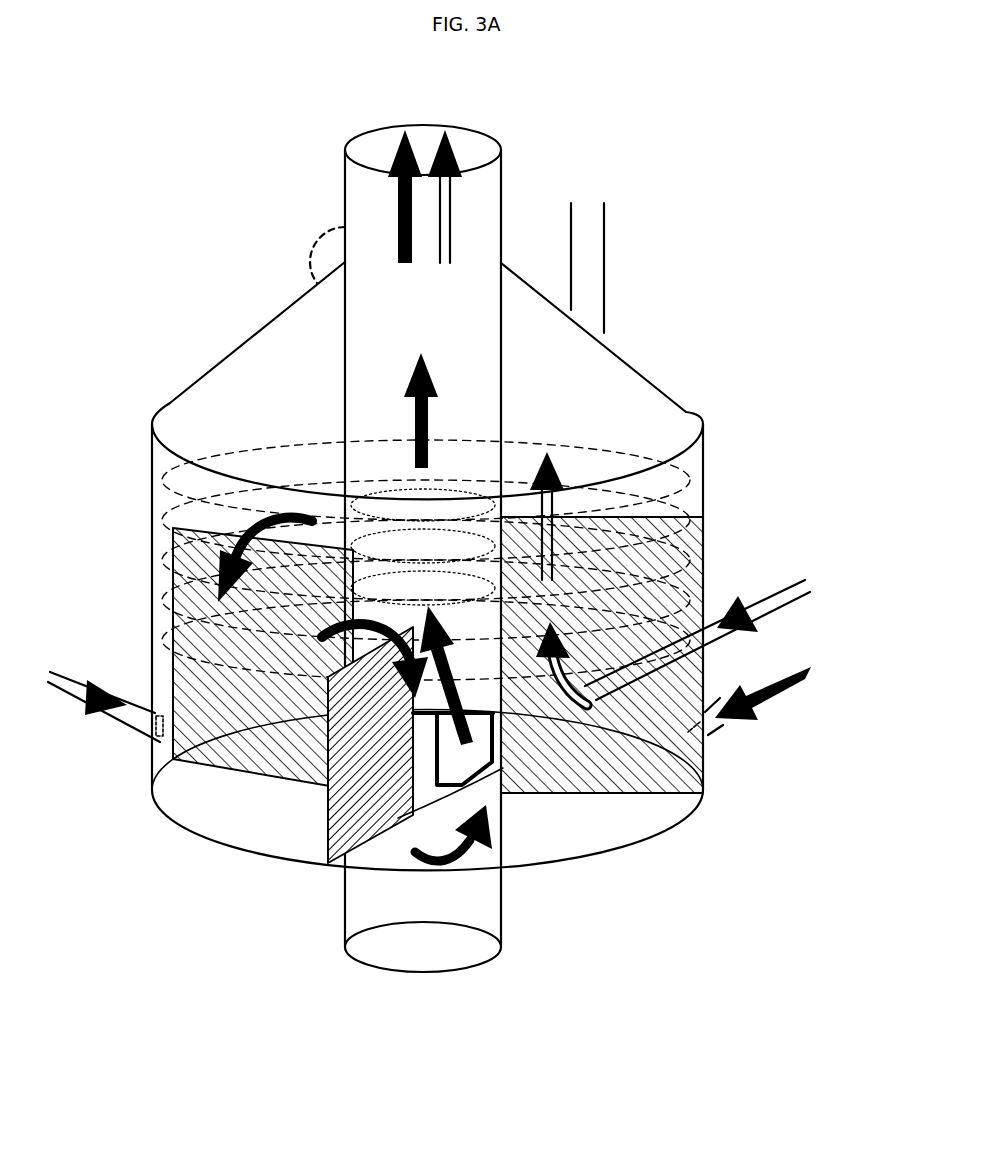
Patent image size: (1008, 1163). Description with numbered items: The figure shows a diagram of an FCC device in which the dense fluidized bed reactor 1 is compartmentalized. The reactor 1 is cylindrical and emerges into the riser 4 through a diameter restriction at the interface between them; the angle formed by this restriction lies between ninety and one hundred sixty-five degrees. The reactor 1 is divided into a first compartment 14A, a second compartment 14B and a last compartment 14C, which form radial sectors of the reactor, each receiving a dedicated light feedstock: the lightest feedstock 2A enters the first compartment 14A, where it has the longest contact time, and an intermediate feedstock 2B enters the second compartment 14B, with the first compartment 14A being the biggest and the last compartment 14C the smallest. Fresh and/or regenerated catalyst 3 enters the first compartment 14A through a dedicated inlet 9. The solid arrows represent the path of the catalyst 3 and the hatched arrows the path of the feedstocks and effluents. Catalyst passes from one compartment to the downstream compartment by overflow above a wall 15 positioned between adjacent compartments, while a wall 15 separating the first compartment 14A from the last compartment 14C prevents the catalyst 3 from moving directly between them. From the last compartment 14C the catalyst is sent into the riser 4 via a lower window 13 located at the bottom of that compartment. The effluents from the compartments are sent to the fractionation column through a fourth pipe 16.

The dense fluidized bed reactor 1 is at (152, 490).
The lightest feedstock 2A is at (773, 592).
The intermediate feedstock 2B is at (63, 693).
The fresh and/or regenerated catalyst 3 is at (780, 697).
The riser 4 is at (343, 925).
The dedicated inlet 9 is at (715, 733).
The lower window 13 is at (420, 765).
The first compartment 14A is at (592, 472).
The second compartment 14B is at (232, 817).
The last compartment 14C is at (652, 817).
The wall 15 is at (703, 545).
The fourth pipe 16 is at (605, 235).